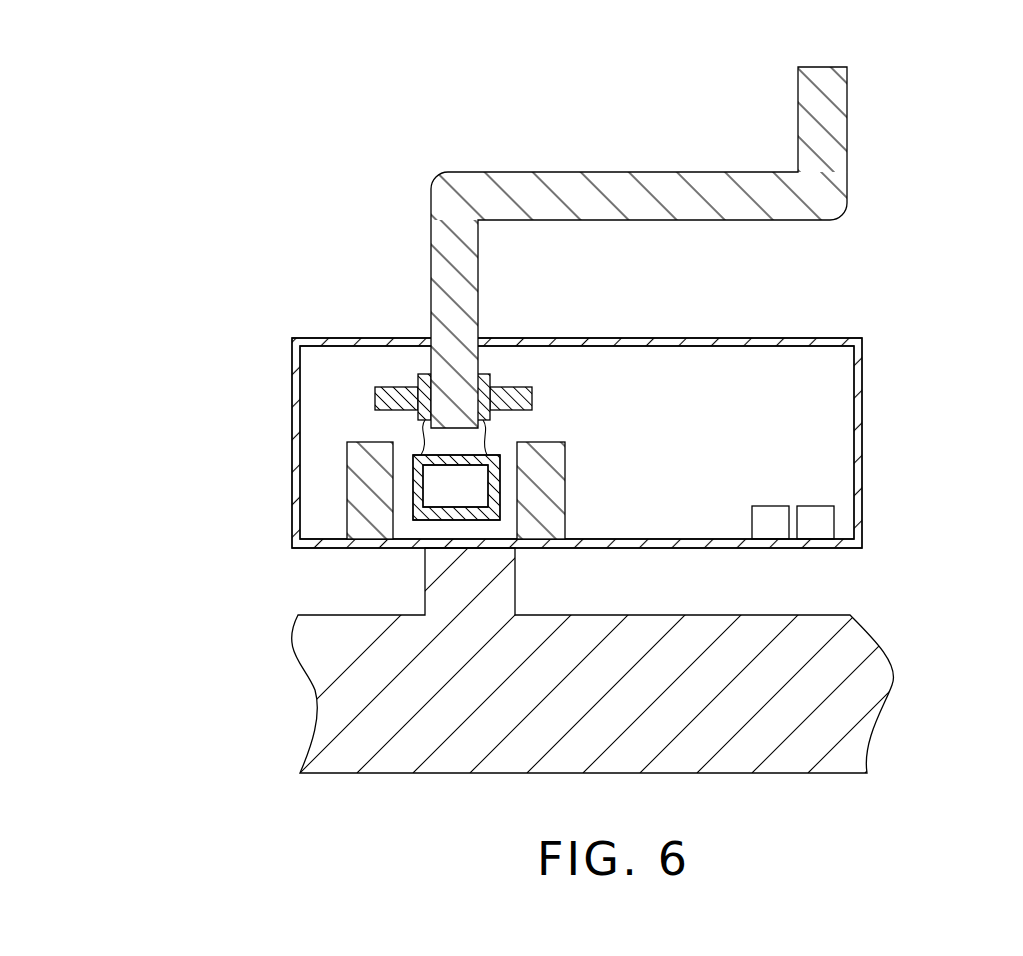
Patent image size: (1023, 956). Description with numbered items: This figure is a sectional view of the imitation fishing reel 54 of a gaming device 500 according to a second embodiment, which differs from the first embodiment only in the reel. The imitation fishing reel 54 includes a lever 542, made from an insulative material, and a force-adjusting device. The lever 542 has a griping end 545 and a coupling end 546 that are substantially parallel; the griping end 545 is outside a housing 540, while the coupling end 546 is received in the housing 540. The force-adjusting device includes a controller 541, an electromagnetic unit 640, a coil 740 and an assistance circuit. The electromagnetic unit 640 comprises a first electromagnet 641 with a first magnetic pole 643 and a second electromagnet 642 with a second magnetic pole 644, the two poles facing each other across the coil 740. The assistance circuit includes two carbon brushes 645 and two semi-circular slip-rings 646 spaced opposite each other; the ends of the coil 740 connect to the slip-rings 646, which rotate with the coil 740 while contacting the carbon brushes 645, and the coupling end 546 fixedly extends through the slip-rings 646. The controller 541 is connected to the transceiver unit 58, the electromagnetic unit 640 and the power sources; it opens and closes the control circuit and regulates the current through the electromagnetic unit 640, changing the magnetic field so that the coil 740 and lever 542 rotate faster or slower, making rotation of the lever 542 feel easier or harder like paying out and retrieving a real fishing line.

The gaming device 500 is at (262, 92).
The imitation fishing reel 54 is at (405, 303).
The griping end 545 is at (823, 127).
The lever 542 is at (685, 207).
The coupling end 546 is at (450, 400).
The housing 540 is at (857, 413).
The controller 541 is at (777, 525).
The transceiver unit 58 is at (822, 505).
The electromagnetic unit 640 is at (584, 476).
The first electromagnet 641 is at (553, 498).
The second electromagnet 642 is at (367, 473).
The first magnetic pole 643 is at (508, 452).
The second magnetic pole 644 is at (398, 503).
The carbon brushes 645 is at (395, 402).
The slip-rings 646 is at (423, 372).
The coil 740 is at (417, 453).